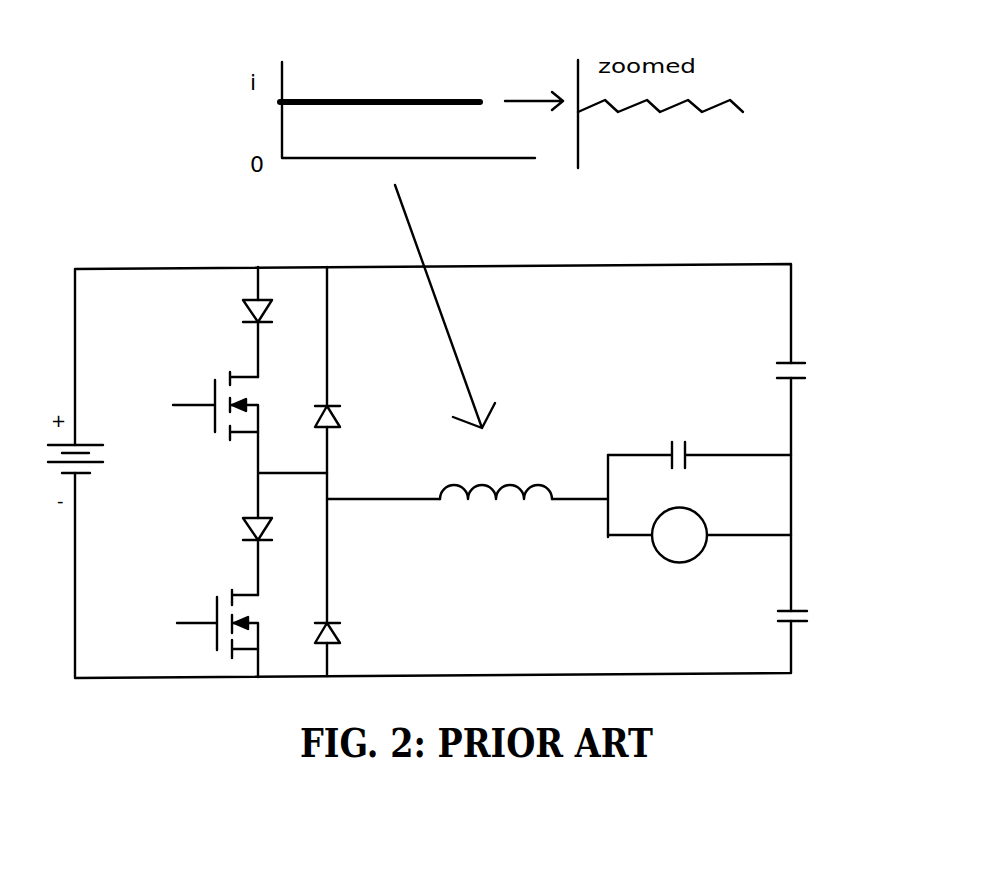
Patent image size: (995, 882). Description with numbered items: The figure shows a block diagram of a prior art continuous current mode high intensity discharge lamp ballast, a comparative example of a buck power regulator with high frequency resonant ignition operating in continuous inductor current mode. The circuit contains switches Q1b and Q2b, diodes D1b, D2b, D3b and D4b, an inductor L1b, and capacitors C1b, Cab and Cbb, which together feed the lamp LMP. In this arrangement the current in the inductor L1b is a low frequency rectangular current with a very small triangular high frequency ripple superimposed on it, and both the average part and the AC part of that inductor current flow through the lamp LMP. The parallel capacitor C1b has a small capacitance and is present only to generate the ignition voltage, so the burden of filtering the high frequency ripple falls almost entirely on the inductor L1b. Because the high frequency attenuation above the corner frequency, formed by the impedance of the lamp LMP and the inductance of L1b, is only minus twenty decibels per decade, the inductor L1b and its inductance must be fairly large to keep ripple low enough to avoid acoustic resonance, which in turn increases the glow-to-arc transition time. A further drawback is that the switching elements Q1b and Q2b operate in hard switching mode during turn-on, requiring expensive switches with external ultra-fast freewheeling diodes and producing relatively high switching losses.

The diode D3b is at (230, 304).
The switch Q1b is at (213, 393).
The diode D4b is at (230, 520).
The switch Q2b is at (213, 613).
The diode D1b is at (355, 410).
The diode D2b is at (356, 627).
The inductor L1b is at (496, 473).
The parallel capacitor C1b is at (699, 435).
The lamp LMP is at (699, 556).
The capacitor Cab is at (766, 369).
The capacitor Cbb is at (767, 614).